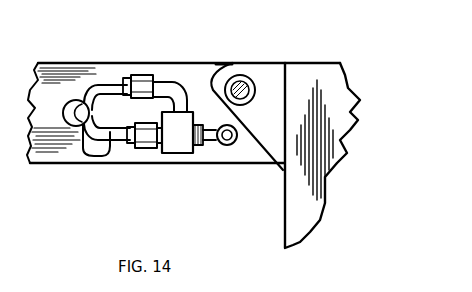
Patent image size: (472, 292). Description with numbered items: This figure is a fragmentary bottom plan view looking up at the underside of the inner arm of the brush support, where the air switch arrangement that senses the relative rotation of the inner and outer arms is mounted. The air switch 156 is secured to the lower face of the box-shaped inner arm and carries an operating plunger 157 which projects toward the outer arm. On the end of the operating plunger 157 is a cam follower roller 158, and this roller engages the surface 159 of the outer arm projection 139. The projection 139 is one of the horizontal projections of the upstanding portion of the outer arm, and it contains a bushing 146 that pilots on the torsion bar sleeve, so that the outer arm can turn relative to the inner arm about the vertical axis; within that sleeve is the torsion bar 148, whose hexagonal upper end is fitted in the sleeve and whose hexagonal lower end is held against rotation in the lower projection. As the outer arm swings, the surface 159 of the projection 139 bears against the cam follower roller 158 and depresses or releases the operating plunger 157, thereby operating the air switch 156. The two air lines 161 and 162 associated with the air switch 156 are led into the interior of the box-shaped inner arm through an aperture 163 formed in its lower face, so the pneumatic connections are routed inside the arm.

The projection 139 is at (268, 72).
The bushing 146 is at (216, 76).
The torsion bar 148 is at (237, 75).
The air switch 156 is at (172, 154).
The operating plunger 157 is at (212, 150).
The cam follower roller 158 is at (236, 146).
The surface 159 is at (262, 160).
The air line 161 is at (105, 160).
The air line 162 is at (104, 84).
The aperture 163 is at (88, 163).